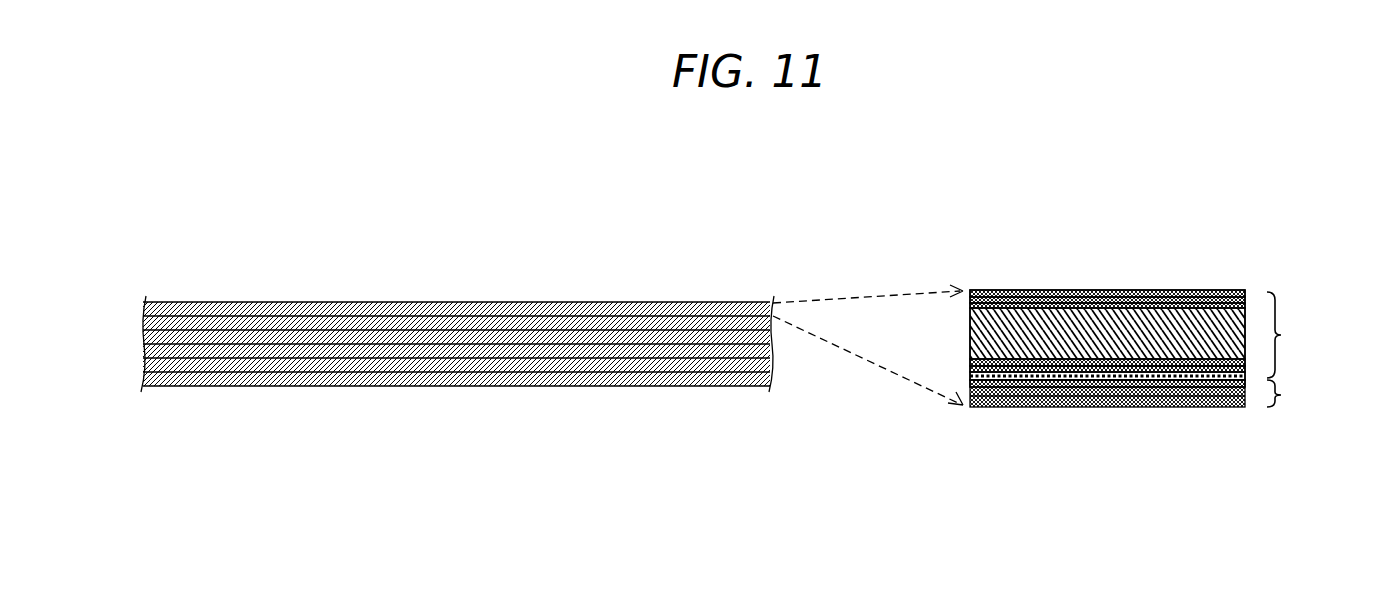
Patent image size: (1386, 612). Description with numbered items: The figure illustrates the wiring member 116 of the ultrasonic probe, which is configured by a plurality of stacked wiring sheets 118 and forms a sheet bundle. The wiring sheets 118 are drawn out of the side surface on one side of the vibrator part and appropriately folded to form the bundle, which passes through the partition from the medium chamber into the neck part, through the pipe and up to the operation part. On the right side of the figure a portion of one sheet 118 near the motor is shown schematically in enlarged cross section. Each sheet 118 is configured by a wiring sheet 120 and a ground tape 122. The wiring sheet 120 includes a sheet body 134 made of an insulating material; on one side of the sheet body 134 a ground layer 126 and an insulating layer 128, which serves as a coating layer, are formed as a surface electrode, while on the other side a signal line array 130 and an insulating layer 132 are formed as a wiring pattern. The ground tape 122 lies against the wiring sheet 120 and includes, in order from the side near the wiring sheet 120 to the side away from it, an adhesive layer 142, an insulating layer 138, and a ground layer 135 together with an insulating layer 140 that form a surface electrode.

The wiring member 116 is at (405, 301).
The wiring sheet 118 is at (497, 302).
The wiring sheet 120 is at (1152, 335).
The ground tape 122 is at (1152, 393).
The ground layer 126 is at (1128, 290).
The insulating layer 128 is at (1153, 211).
The signal line array 130 is at (1042, 357).
The insulating layer 132 is at (1035, 361).
The sheet body 134 is at (1068, 290).
The ground layer 135 is at (1068, 407).
The insulating layer 138 is at (1102, 407).
The insulating layer 140 is at (1165, 407).
The adhesive layer 142 is at (1200, 407).